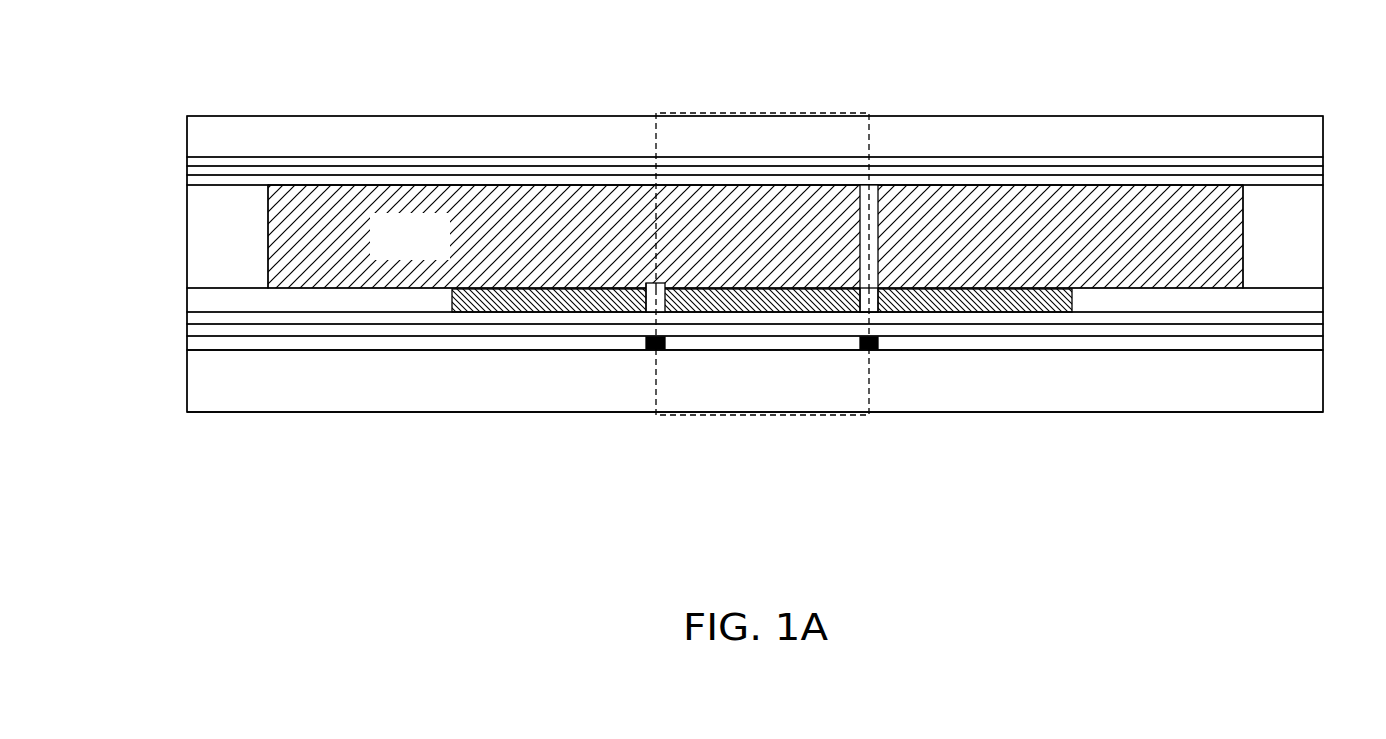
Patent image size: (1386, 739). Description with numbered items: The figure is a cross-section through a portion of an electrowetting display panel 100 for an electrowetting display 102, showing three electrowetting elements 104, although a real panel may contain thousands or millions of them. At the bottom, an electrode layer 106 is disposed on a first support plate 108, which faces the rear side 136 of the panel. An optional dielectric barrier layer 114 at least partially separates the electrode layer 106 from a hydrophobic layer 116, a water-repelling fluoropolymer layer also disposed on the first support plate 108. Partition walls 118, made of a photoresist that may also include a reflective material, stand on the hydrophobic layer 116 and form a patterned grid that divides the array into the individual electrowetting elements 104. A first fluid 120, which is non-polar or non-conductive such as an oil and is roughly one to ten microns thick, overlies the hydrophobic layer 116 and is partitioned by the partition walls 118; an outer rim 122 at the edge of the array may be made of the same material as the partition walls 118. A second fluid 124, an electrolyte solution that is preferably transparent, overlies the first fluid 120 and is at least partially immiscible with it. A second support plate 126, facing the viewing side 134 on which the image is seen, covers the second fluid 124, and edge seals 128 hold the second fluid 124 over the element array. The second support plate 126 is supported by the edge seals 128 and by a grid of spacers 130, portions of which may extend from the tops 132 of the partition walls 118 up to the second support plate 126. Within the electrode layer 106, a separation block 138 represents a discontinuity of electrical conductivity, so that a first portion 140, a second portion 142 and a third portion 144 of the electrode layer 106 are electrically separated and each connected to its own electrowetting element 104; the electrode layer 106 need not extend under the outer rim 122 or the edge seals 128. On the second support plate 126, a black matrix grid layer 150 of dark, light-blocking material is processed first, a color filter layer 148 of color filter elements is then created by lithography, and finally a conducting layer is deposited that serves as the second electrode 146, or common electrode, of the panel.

The electrowetting display panel 100 is at (1330, 246).
The electrowetting display 102 is at (930, 57).
The electrowetting element 104 is at (656, 397).
The electrode layer 106 is at (187, 343).
The first support plate 108 is at (300, 394).
The dielectric barrier layer 114 is at (187, 331).
The hydrophobic layer 116 is at (187, 318).
The partition walls 118 is at (665, 313).
The first fluid 120 is at (960, 312).
The outer rim 122 is at (187, 300).
The second fluid 124 is at (432, 251).
The second support plate 126 is at (298, 141).
The edge seals 128 is at (243, 244).
The spacers 130 is at (882, 205).
The tops of the partition walls 132 is at (646, 284).
The viewing side 134 is at (588, 88).
The rear side 136 is at (755, 426).
The separation block 138 is at (646, 345).
The first portion of the electrode layer 140 is at (525, 352).
The second portion of the electrode layer 142 is at (835, 352).
The third portion of the electrode layer 144 is at (1172, 350).
The second electrode 146 is at (360, 185).
The color filter layer 148 is at (1090, 172).
The black matrix grid layer 150 is at (1203, 163).